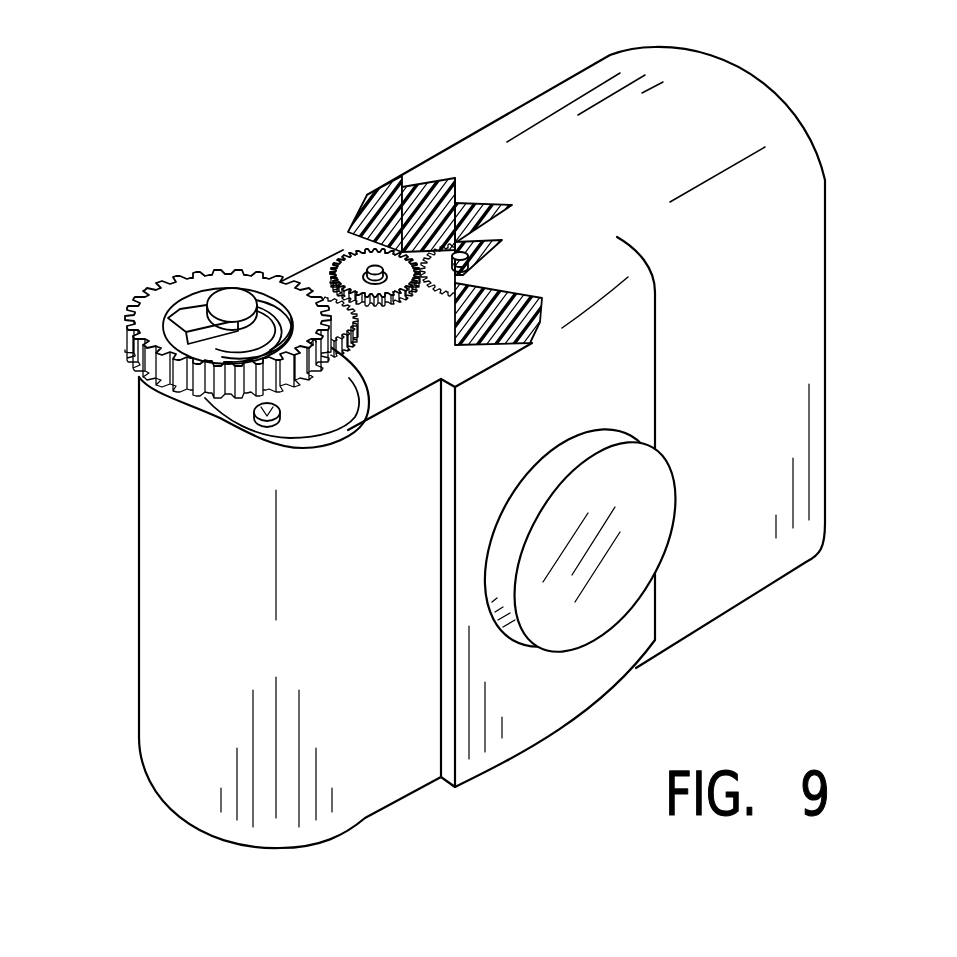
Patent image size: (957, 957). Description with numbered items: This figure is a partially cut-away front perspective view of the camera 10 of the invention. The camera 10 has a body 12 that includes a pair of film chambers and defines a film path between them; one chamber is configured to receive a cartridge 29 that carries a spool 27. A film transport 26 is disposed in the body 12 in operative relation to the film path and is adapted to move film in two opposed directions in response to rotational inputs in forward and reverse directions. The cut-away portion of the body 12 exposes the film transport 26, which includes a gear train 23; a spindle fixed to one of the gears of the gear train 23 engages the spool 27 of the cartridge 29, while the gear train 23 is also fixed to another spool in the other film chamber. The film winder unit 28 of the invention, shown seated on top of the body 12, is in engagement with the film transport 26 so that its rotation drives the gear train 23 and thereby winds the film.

The camera 10 is at (336, 62).
The body 12 is at (825, 298).
The gear train 23 is at (347, 262).
The film transport 26 is at (375, 277).
The spool 27 is at (262, 413).
The film winder unit 28 is at (128, 352).
The cartridge 29 is at (363, 406).